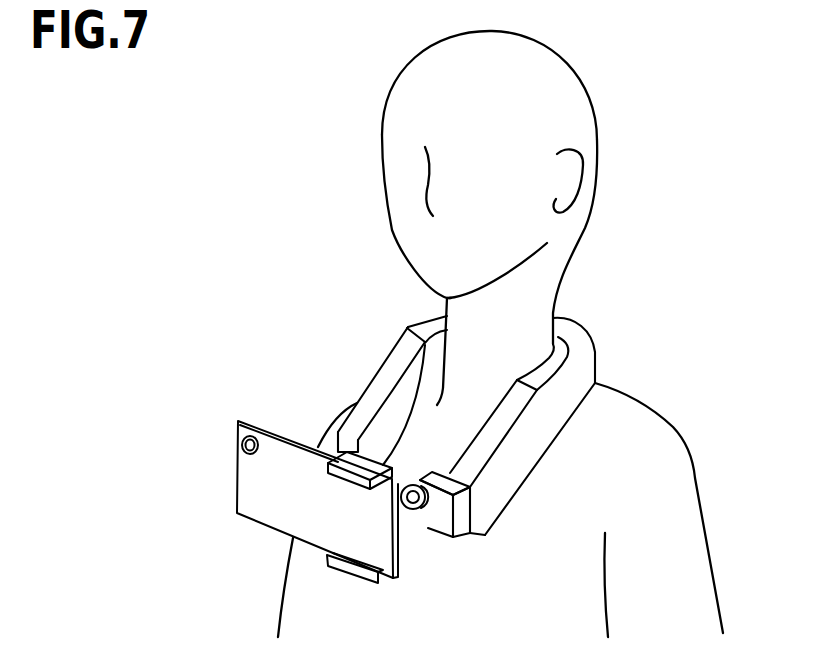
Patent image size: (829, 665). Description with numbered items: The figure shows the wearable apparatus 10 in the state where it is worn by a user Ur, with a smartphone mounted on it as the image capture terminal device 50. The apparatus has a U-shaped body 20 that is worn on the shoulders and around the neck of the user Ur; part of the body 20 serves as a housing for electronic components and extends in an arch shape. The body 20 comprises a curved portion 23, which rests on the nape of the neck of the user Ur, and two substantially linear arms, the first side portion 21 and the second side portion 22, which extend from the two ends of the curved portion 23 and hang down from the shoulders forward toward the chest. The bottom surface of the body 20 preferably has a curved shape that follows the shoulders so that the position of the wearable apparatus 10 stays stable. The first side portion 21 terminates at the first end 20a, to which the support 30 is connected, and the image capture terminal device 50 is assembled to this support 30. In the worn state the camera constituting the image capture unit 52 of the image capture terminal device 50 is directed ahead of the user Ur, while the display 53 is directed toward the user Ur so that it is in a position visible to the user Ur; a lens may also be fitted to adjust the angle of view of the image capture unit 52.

The user Ur is at (593, 115).
The wearable apparatus 10 is at (309, 323).
The body 20 is at (657, 362).
The first side portion 21 is at (541, 447).
The second side portion 22 is at (394, 343).
The curved portion 23 is at (583, 320).
The first end 20a is at (465, 517).
The support 30 is at (411, 512).
The image capture terminal device 50 is at (250, 419).
The image capture unit 52 is at (241, 445).
The display 53 is at (298, 437).